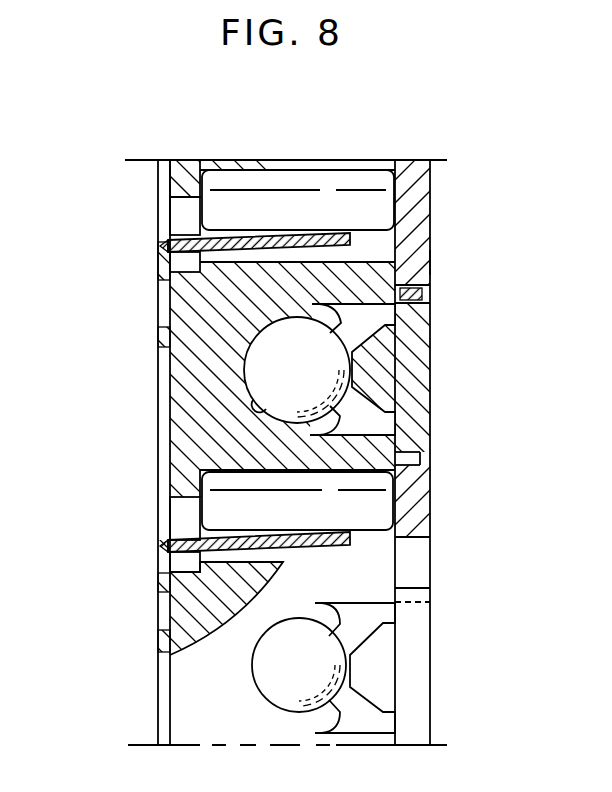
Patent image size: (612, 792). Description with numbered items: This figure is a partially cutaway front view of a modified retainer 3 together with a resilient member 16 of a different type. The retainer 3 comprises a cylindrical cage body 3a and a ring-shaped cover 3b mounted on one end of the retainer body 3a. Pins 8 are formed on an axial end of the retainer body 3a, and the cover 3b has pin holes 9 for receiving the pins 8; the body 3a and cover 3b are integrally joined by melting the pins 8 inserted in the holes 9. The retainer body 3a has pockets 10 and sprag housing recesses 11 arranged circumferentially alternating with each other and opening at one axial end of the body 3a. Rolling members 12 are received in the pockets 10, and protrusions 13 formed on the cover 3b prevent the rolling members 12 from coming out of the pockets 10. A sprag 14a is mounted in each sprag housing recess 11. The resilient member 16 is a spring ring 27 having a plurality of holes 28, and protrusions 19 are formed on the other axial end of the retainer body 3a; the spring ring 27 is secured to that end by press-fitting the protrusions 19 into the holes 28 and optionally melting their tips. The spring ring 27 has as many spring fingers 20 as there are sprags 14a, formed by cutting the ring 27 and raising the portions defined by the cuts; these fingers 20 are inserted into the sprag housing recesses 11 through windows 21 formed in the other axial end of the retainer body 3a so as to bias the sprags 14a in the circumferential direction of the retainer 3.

The retainer 3 is at (436, 200).
The cage body 3a is at (195, 403).
The ring-shaped cover 3b is at (433, 262).
The pins 8 is at (410, 300).
The pin holes 9 is at (420, 293).
The pockets 10 is at (260, 408).
The sprag housing recesses 11 is at (263, 172).
The rolling members 12 is at (257, 362).
The protrusions 13 is at (398, 375).
The sprag 14a is at (310, 182).
The resilient member 16 is at (148, 720).
The protrusions 19 is at (180, 606).
The spring fingers 20 is at (337, 232).
The windows 21 is at (182, 216).
The spring ring 27 is at (165, 677).
The holes 28 is at (170, 588).